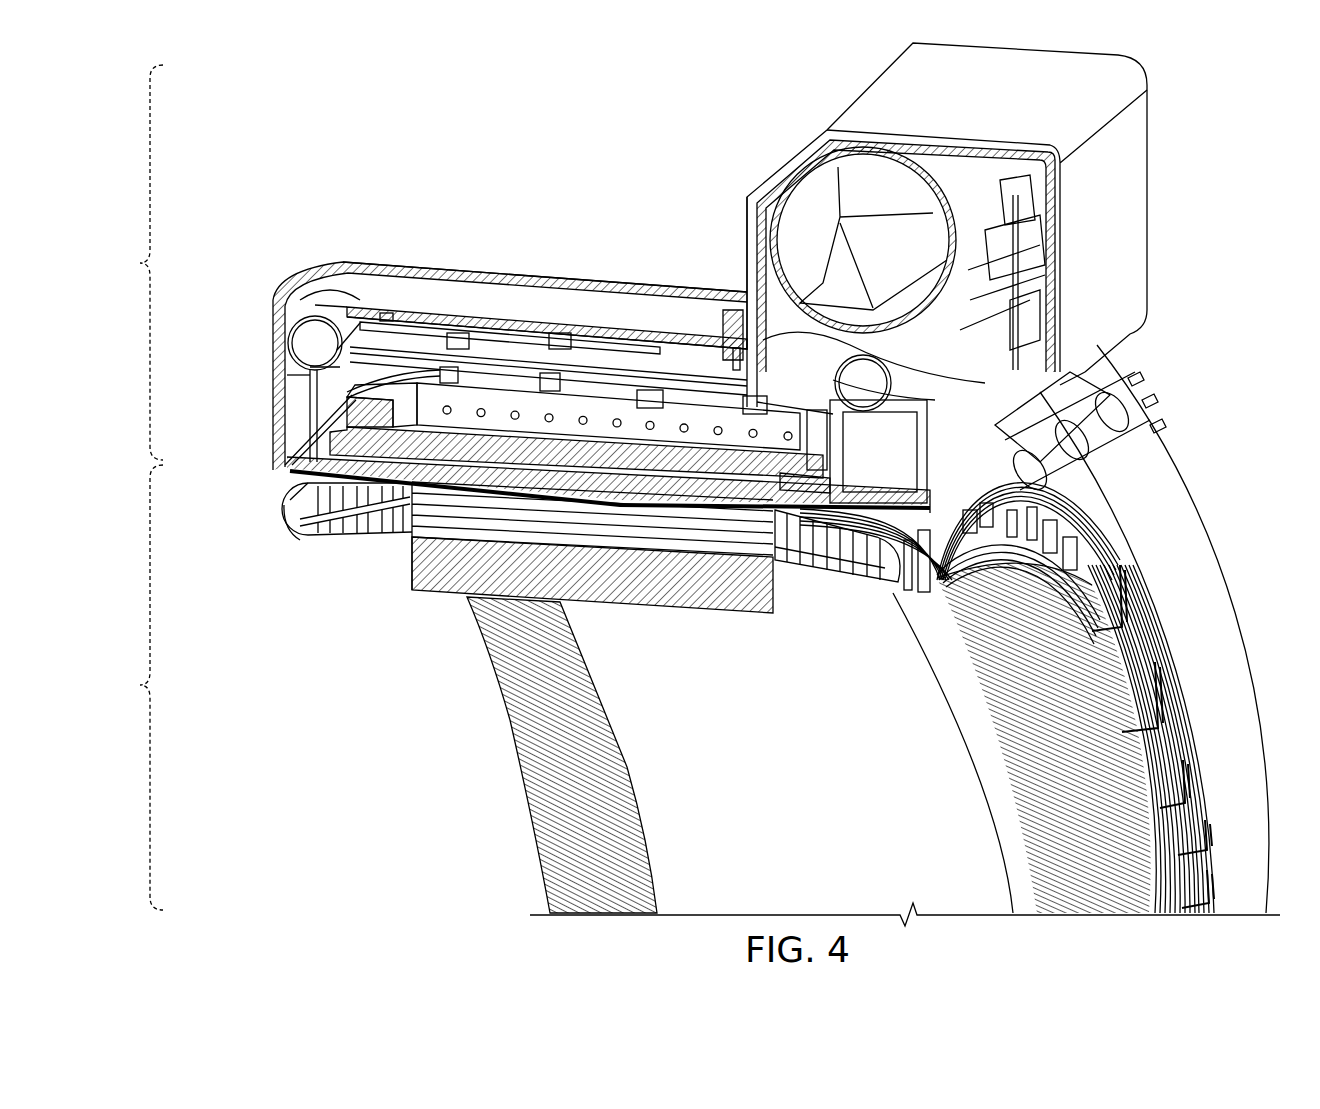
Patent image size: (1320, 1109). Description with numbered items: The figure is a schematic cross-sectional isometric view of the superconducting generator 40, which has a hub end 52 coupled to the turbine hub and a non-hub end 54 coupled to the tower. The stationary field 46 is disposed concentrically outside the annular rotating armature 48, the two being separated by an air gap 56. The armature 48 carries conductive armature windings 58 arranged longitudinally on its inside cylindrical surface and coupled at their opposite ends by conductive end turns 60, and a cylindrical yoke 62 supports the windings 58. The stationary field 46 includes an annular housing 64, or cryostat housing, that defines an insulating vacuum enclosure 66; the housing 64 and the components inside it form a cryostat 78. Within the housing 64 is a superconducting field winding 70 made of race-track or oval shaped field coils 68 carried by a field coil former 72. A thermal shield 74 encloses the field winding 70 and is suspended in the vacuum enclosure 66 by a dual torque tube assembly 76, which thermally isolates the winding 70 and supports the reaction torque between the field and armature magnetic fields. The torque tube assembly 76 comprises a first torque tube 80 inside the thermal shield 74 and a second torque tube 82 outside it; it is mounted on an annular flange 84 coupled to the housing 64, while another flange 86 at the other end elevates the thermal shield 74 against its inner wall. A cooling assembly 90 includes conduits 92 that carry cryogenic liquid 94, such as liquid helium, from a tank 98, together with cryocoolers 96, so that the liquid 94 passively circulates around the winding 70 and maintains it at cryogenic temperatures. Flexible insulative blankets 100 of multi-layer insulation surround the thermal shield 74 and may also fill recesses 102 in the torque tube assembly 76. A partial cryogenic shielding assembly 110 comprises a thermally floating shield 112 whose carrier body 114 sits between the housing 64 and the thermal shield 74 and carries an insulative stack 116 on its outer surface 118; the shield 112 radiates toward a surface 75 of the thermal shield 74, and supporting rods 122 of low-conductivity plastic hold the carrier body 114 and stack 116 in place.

The superconducting generator 40 is at (400, 122).
The stationary field 46 is at (128, 262).
The annular rotating armature 48 is at (128, 687).
The hub end 52 is at (265, 333).
The non-hub end 54 is at (1212, 418).
The air gap 56 is at (298, 487).
The conductive armature windings 58 is at (545, 770).
The conductive end turns 60 is at (295, 528).
The cylindrical yoke 62 is at (443, 537).
The annular housing 64 is at (430, 280).
The insulating vacuum enclosure 66 is at (305, 390).
The field coils 68 is at (830, 565).
The superconducting field winding 70 is at (318, 442).
The field coil former 72 is at (612, 480).
The thermal shield 74 is at (645, 360).
The surface of the thermal shield 75 is at (617, 333).
The torque tube assembly 76 is at (690, 340).
The cryostat 78 is at (345, 280).
The first torque tube 80 is at (767, 585).
The second torque tube 82 is at (769, 303).
The annular flange 84 is at (735, 345).
The flange 86 is at (340, 330).
The cooling assembly 90 is at (1205, 180).
The conduits 92 is at (882, 560).
The cryogenic liquid 94 is at (760, 195).
The cryocoolers 96 is at (1105, 395).
The tank 98 is at (870, 125).
The flexible insulative blankets 100 is at (493, 487).
The recesses 102 is at (527, 335).
The partial cryogenic shielding assembly 110 is at (405, 300).
The thermally floating shield 112 is at (457, 310).
The carrier body 114 is at (352, 315).
The insulative stack 116 is at (408, 300).
The outer surface 118 is at (515, 338).
The supporting rods 122 is at (318, 300).